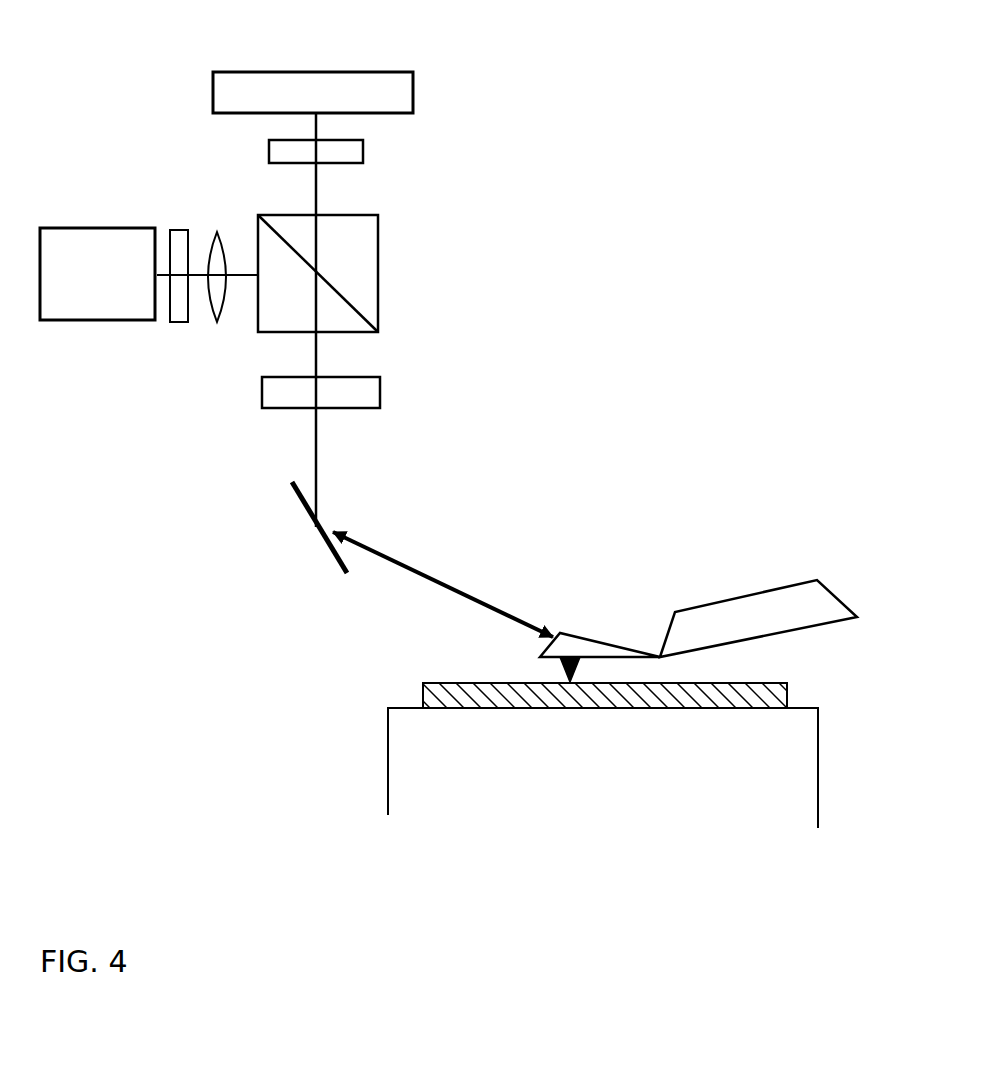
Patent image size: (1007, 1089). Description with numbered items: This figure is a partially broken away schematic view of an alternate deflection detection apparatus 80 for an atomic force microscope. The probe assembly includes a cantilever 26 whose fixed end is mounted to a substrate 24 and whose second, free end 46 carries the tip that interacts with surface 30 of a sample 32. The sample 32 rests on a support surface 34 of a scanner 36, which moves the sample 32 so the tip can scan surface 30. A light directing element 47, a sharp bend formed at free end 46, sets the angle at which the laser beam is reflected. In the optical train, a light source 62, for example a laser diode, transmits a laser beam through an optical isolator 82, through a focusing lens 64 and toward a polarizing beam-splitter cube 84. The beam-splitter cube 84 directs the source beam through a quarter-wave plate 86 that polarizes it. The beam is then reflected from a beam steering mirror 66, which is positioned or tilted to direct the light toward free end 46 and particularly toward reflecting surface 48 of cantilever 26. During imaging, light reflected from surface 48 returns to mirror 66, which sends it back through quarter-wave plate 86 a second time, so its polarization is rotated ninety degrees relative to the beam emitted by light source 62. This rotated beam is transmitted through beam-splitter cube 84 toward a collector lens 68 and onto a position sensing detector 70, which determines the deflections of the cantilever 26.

The substrate 24 is at (752, 605).
The cantilever 26 is at (597, 632).
The surface 30 is at (738, 683).
The sample 32 is at (787, 687).
The support surface 34 is at (810, 708).
The scanner 36 is at (795, 770).
The second, free end 46 is at (535, 668).
The light directing element 47 is at (525, 648).
The reflecting surface 48 is at (565, 630).
The light source 62 is at (57, 228).
The focusing lens 64 is at (222, 322).
The beam steering mirror 66 is at (297, 503).
The collector lens 68 is at (363, 153).
The position sensing detector 70 is at (413, 92).
The deflection detection apparatus 80 is at (405, 225).
The optical isolator 82 is at (177, 322).
The polarizing beam-splitter cube 84 is at (378, 285).
The quarter-wave plate 86 is at (380, 395).